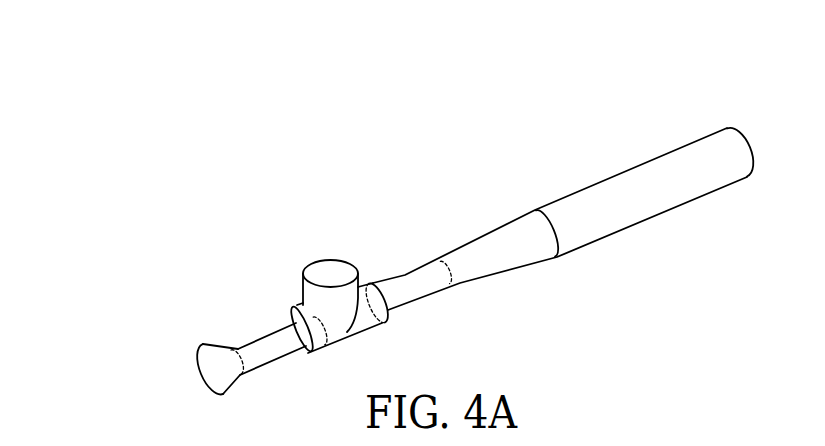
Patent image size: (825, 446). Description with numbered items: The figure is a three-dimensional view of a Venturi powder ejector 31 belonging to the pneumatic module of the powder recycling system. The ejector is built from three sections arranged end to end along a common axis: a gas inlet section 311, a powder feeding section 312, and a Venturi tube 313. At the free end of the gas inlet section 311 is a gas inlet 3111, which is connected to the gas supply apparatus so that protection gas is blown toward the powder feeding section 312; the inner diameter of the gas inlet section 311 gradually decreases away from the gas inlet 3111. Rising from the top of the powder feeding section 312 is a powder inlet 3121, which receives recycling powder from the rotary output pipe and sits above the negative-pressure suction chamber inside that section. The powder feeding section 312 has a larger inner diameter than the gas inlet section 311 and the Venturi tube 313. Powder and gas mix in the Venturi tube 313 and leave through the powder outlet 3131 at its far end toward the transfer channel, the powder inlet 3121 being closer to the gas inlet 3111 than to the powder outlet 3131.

The Venturi powder ejector 31 is at (118, 133).
The gas inlet section 311 is at (258, 343).
The gas inlet 3111 is at (206, 366).
The powder feeding section 312 is at (368, 310).
The powder inlet 3121 is at (327, 273).
The Venturi tube 313 is at (623, 183).
The powder outlet 3131 is at (742, 128).